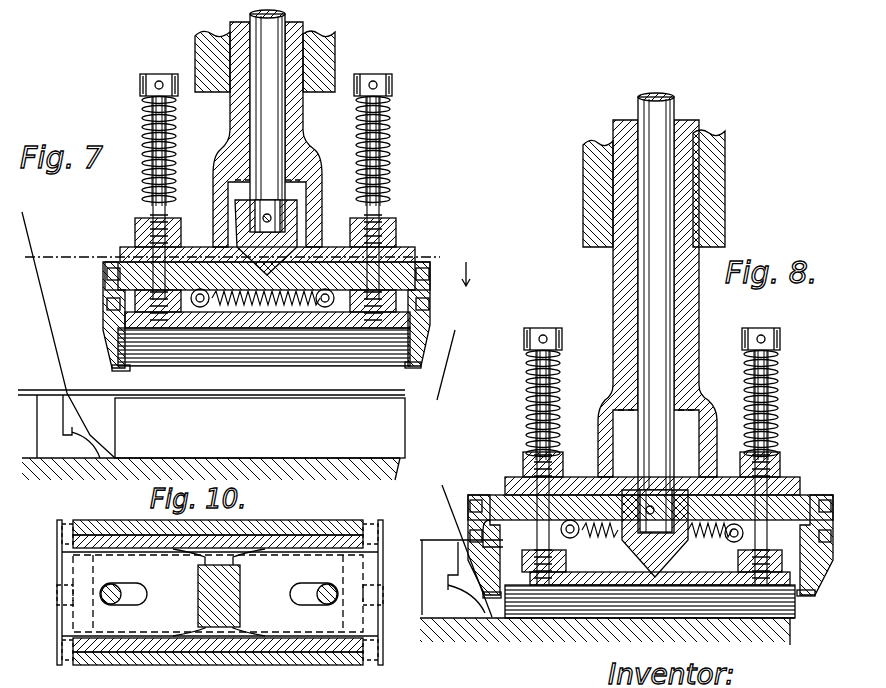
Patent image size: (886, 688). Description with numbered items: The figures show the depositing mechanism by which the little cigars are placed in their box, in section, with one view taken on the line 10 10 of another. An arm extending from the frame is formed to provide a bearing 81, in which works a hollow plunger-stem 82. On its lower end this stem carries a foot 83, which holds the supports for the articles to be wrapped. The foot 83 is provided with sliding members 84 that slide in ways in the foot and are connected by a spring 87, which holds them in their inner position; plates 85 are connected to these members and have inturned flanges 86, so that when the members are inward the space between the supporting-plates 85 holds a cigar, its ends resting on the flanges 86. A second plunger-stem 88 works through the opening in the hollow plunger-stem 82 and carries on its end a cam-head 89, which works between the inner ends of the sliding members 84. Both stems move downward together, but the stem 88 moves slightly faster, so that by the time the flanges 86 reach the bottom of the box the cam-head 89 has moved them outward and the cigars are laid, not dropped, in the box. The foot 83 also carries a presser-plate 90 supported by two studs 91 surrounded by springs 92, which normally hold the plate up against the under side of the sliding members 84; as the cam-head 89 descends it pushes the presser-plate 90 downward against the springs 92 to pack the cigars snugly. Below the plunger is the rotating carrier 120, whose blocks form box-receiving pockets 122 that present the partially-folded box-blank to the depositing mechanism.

In FIG. 7, the bearing 81 is at (333, 70).
In FIG. 8, the bearing 81 is at (726, 193).
In FIG. 7, the hollow plunger-stem 82 is at (305, 158).
In FIG. 8, the hollow plunger-stem 82 is at (699, 310).
In FIG. 7, the foot 83 is at (126, 248).
In FIG. 10, the foot 83 is at (118, 540).
In FIG. 8, the foot 83 is at (706, 480).
In FIG. 7, the sliding members 84 is at (118, 263).
In FIG. 10, the sliding members 84 is at (218, 593).
In FIG. 8, the sliding members 84 is at (495, 494).
In FIG. 7, the supporting-plates 85 is at (104, 340).
In FIG. 10, the supporting-plates 85 is at (58, 573).
In FIG. 8, the supporting-plates 85 is at (470, 574).
In FIG. 7, the inturned flanges 86 is at (128, 369).
In FIG. 8, the inturned flanges 86 is at (483, 612).
In FIG. 7, the spring 87 is at (262, 304).
In FIG. 8, the spring 87 is at (652, 541).
In FIG. 7, the second plunger-stem 88 is at (267, 121).
In FIG. 8, the second plunger-stem 88 is at (677, 99).
In FIG. 7, the cam-head 89 is at (228, 230).
In FIG. 10, the cam-head 89 is at (240, 603).
In FIG. 8, the cam-head 89 is at (628, 538).
In FIG. 7, the presser-plate 90 is at (298, 334).
In FIG. 10, the presser-plate 90 is at (320, 526).
In FIG. 8, the presser-plate 90 is at (612, 593).
In FIG. 7, the studs 91 is at (145, 182).
In FIG. 10, the studs 91 is at (115, 605).
In FIG. 8, the studs 91 is at (535, 407).
In FIG. 7, the springs 92 is at (172, 160).
In FIG. 8, the springs 92 is at (532, 368).
In FIG. 7, the section line 10 10 is at (264, 267).
In FIG. 7, the rotating carrier 120 is at (368, 458).
In FIG. 7, the box-receiving pockets 122 is at (238, 335).
In FIG. 8, the box-receiving pockets 122 is at (461, 551).